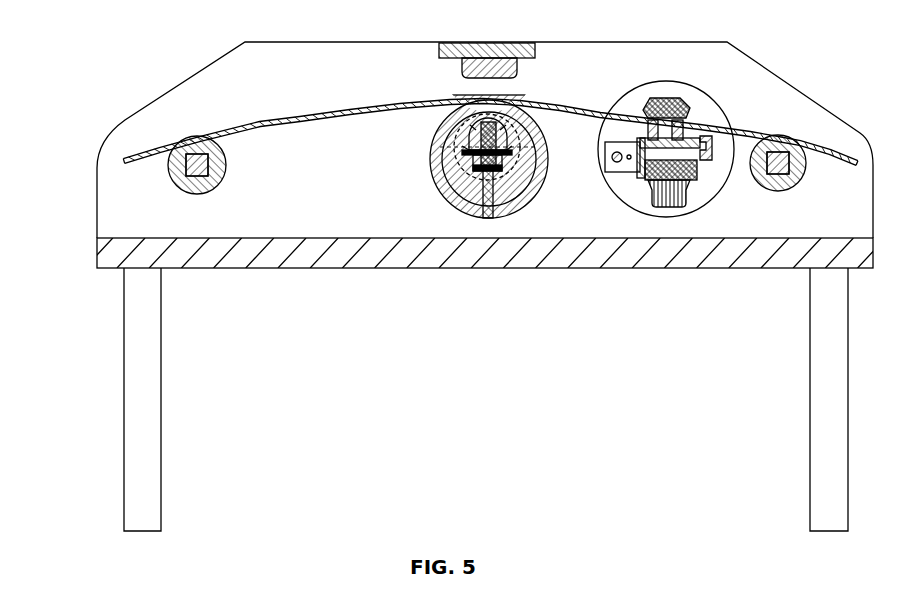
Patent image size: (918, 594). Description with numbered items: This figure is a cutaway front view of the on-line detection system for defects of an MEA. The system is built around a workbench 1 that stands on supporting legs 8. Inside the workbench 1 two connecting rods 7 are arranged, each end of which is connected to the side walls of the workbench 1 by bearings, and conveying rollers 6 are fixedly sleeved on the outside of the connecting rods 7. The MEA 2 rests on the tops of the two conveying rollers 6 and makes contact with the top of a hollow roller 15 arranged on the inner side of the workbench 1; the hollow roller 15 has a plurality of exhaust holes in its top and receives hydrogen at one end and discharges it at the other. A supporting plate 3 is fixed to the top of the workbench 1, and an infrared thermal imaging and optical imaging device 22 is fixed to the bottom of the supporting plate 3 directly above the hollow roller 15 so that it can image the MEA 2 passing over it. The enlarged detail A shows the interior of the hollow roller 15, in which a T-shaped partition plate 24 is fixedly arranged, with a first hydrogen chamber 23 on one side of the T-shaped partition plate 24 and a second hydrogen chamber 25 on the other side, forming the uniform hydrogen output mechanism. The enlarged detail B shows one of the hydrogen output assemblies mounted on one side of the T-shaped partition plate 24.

The workbench 1 is at (97, 269).
The MEA 2 is at (300, 119).
The supporting plate 3 is at (440, 57).
The conveying roller 6 is at (178, 187).
The connecting rod 7 is at (167, 160).
The supporting leg 8 is at (124, 346).
The hollow roller 15 is at (433, 177).
The infrared thermal imaging and optical imaging device 22 is at (462, 70).
The first hydrogen chamber 23 is at (470, 190).
The T-shaped partition plate 24 is at (483, 212).
The second hydrogen chamber 25 is at (518, 190).
The detail A is at (449, 197).
The detail B is at (620, 200).